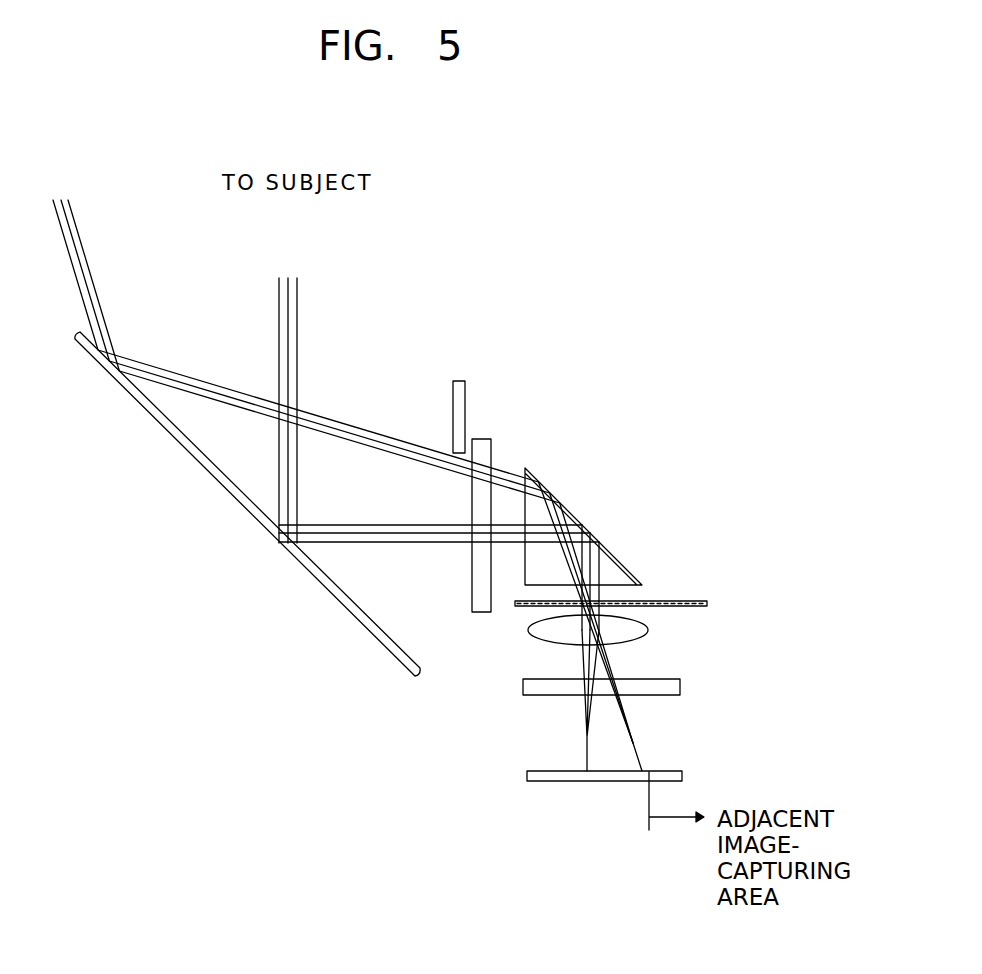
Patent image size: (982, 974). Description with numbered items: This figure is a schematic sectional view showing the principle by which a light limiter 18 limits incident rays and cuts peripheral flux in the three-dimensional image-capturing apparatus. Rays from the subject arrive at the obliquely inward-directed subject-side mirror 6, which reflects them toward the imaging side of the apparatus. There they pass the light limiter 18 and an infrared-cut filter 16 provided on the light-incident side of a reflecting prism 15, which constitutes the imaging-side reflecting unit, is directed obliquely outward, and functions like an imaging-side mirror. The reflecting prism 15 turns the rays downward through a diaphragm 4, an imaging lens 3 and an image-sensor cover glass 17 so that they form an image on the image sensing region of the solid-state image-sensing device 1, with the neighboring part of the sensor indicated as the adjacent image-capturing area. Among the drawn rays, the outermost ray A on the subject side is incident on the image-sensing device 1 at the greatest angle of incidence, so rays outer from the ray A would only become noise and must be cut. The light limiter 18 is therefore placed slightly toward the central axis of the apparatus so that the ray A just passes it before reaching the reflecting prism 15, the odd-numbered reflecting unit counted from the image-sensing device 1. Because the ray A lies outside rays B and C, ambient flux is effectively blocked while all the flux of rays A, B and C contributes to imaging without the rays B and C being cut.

The image-sensing device 1 is at (528, 773).
The imaging lens 3 is at (532, 628).
The diaphragm 4 is at (708, 604).
The subject-side mirror 6 is at (214, 468).
The reflecting prism 15 is at (608, 551).
The infrared-cut filter 16 is at (487, 455).
The image-sensor cover glass 17 is at (522, 688).
The light limiter 18 is at (461, 427).
The outermost ray A is at (327, 410).
The ray B is at (361, 430).
The ray C is at (397, 453).